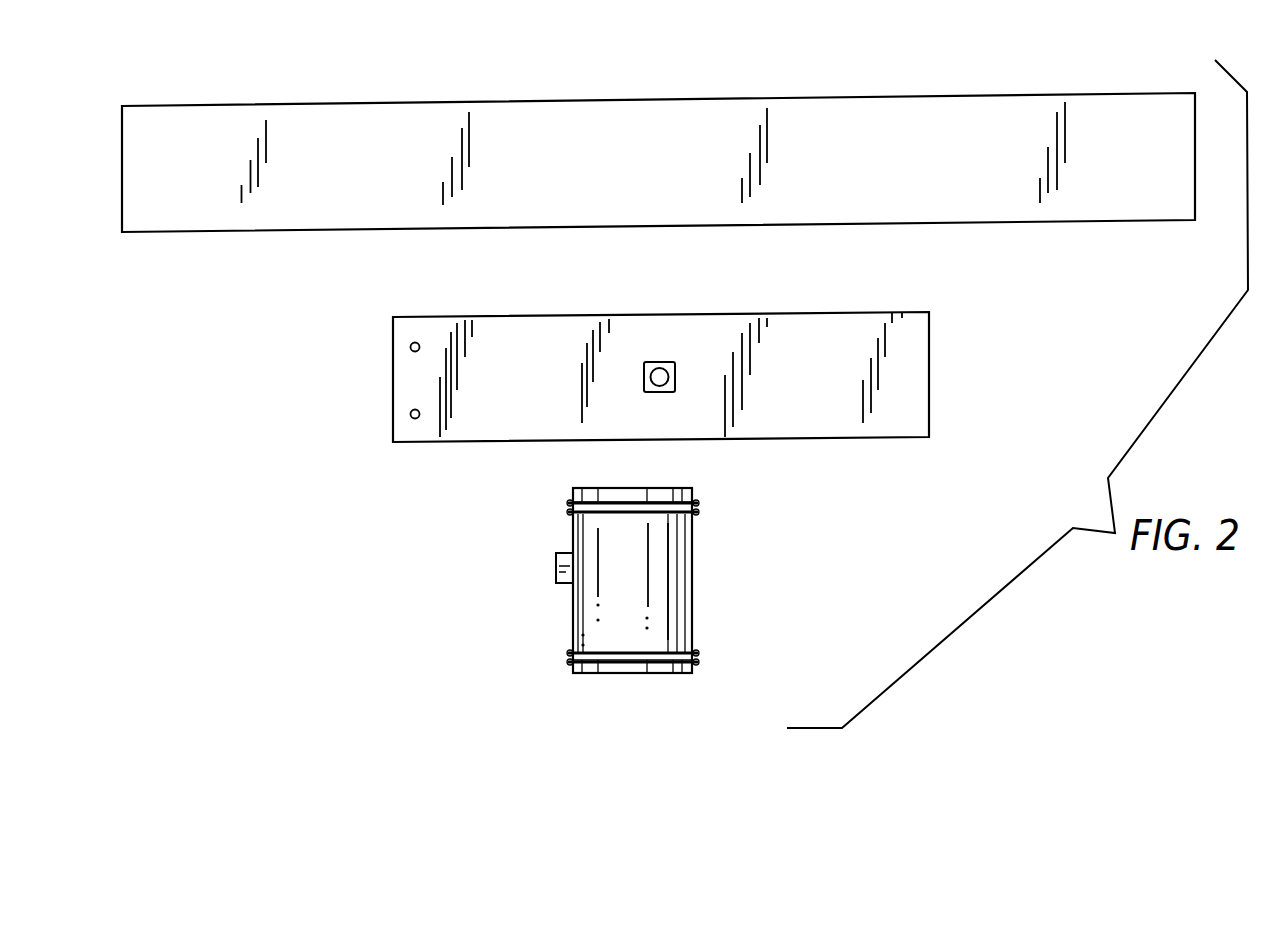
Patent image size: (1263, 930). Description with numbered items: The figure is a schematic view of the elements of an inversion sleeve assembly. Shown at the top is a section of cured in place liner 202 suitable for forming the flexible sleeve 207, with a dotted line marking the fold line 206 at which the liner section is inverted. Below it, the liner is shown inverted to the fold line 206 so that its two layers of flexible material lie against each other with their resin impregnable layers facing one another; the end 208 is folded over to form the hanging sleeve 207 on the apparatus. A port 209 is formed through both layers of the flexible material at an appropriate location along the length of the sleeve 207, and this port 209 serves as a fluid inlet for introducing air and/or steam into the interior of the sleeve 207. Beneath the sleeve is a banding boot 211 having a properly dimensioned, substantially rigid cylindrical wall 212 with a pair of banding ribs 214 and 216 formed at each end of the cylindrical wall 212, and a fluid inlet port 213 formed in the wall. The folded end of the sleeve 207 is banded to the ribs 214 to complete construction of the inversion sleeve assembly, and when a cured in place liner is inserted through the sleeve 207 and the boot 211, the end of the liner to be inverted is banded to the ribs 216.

The shelf 202 is at (590, 86).
The fold line 206 is at (658, 223).
The flexible sleeve 207 is at (887, 333).
The end 208 is at (396, 398).
The port 209 is at (644, 392).
The banding boot 211 is at (627, 609).
The cylindrical wall 212 is at (693, 546).
The fluid inlet port 213 is at (554, 578).
The banding rib 214 is at (568, 510).
The banding rib 216 is at (568, 661).